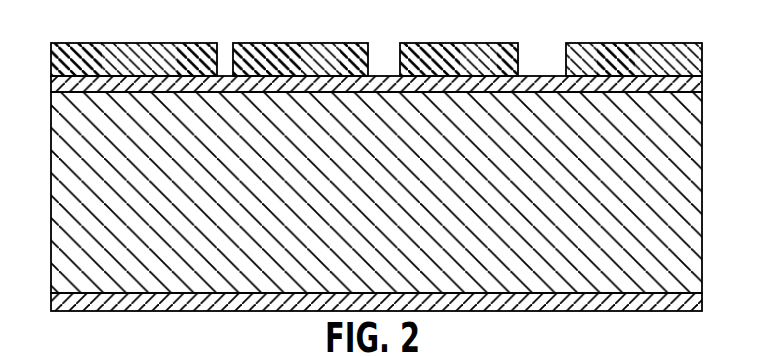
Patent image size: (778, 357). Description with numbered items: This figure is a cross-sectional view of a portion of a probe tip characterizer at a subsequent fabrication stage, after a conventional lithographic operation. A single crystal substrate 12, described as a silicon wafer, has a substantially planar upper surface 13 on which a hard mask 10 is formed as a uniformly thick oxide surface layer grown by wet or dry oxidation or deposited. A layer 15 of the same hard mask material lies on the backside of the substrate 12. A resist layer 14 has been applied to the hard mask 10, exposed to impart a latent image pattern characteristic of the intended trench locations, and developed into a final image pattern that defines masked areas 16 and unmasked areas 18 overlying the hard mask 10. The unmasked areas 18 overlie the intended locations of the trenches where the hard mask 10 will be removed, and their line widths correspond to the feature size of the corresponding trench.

The hard mask 10 is at (695, 90).
The single crystal substrate 12 is at (693, 172).
The upper surface 13 is at (102, 87).
The resist layer 14 is at (695, 58).
The layer of hard mask material 15 is at (695, 302).
The masked areas 16 is at (177, 76).
The unmasked areas 18 is at (225, 75).